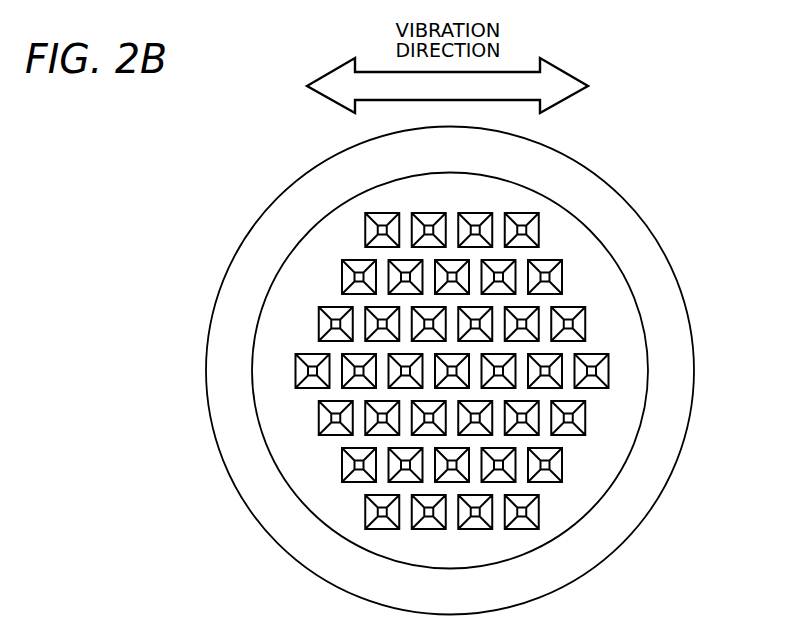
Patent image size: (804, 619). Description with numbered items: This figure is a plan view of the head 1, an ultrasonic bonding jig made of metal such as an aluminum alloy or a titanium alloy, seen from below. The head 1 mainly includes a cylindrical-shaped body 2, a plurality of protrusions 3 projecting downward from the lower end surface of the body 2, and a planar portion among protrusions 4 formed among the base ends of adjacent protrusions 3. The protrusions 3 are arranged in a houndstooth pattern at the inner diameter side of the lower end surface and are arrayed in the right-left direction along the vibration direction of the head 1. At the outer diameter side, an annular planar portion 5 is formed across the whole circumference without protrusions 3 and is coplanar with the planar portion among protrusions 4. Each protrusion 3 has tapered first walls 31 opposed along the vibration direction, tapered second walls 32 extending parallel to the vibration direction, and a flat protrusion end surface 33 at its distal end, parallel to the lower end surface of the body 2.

The head 1 is at (462, 371).
The body 2 is at (666, 272).
The protrusion 3 is at (667, 420).
The planar portion among protrusions 4 is at (335, 381).
The annular planar portion 5 is at (277, 300).
The first wall 31 is at (575, 384).
The second wall 32 is at (584, 382).
The protrusion end surface 33 is at (593, 369).